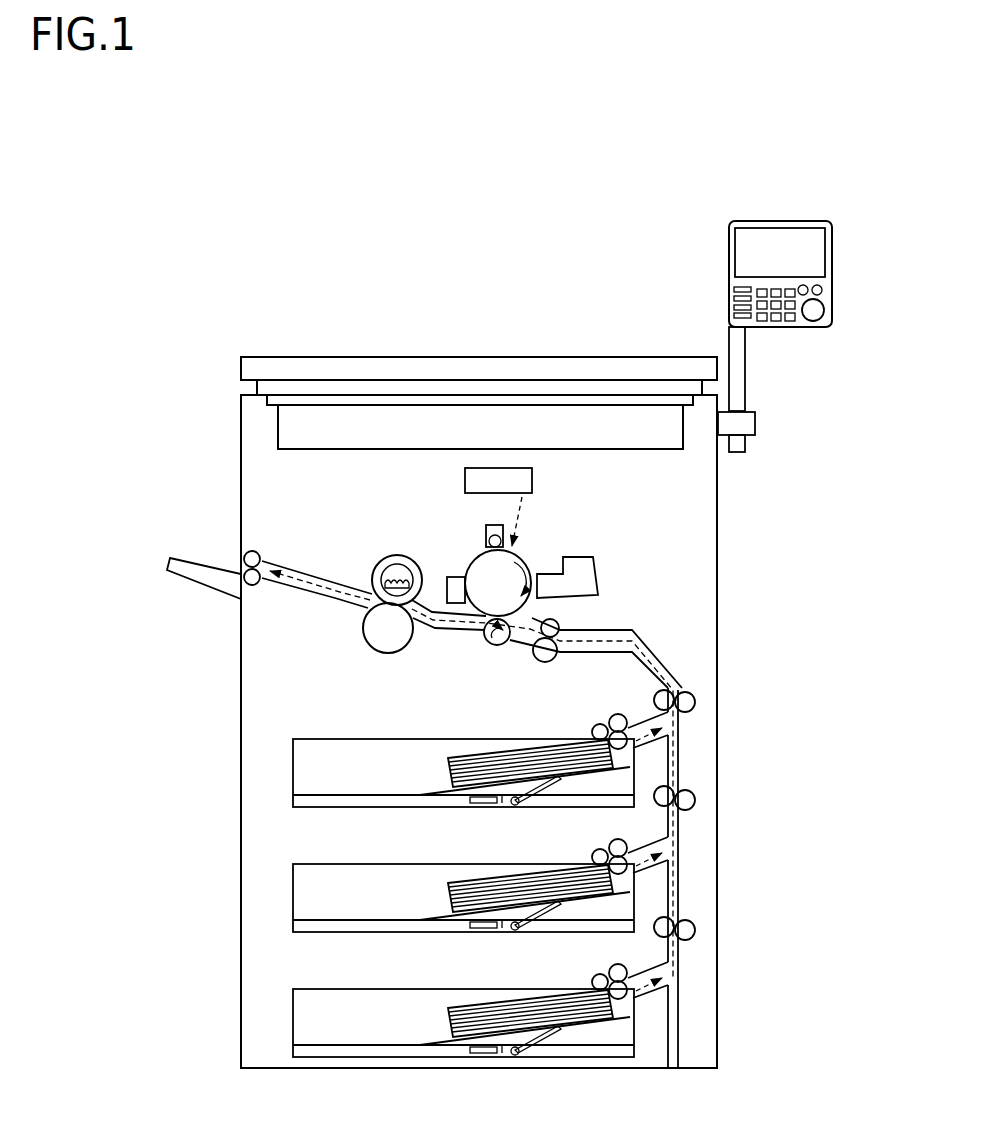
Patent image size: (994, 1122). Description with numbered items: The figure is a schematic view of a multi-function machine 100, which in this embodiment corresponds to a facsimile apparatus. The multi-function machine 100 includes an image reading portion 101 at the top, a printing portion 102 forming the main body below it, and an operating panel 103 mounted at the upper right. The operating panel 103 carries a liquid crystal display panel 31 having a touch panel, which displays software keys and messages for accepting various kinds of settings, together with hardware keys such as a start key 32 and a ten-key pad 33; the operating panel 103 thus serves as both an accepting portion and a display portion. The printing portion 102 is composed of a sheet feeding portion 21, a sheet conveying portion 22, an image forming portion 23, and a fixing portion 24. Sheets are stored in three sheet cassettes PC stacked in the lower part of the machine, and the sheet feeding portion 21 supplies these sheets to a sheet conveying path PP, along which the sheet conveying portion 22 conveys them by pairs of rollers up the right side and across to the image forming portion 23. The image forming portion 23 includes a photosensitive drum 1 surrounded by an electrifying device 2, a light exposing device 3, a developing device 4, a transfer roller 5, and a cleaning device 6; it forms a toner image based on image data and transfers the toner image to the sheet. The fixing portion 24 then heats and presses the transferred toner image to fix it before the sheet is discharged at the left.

The multi-function machine 100 is at (252, 349).
The image reading portion 101 is at (684, 441).
The printing portion 102 is at (684, 590).
The operating panel 103 is at (762, 312).
The liquid crystal display panel 31 is at (769, 236).
The start key 32 is at (813, 320).
The ten-key pad 33 is at (774, 320).
The photosensitive drum 1 is at (483, 568).
The electrifying device 2 is at (491, 528).
The light exposing device 3 is at (470, 483).
The developing device 4 is at (590, 567).
The transfer roller 5 is at (491, 641).
The cleaning device 6 is at (452, 578).
The image forming portion 23 is at (521, 563).
The fixing portion 24 is at (360, 627).
The sheet feeding portion 21 is at (590, 730).
The sheet conveying portion 22 is at (261, 551).
The sheet conveying path PP is at (658, 656).
The sheet cassette PC is at (322, 739).